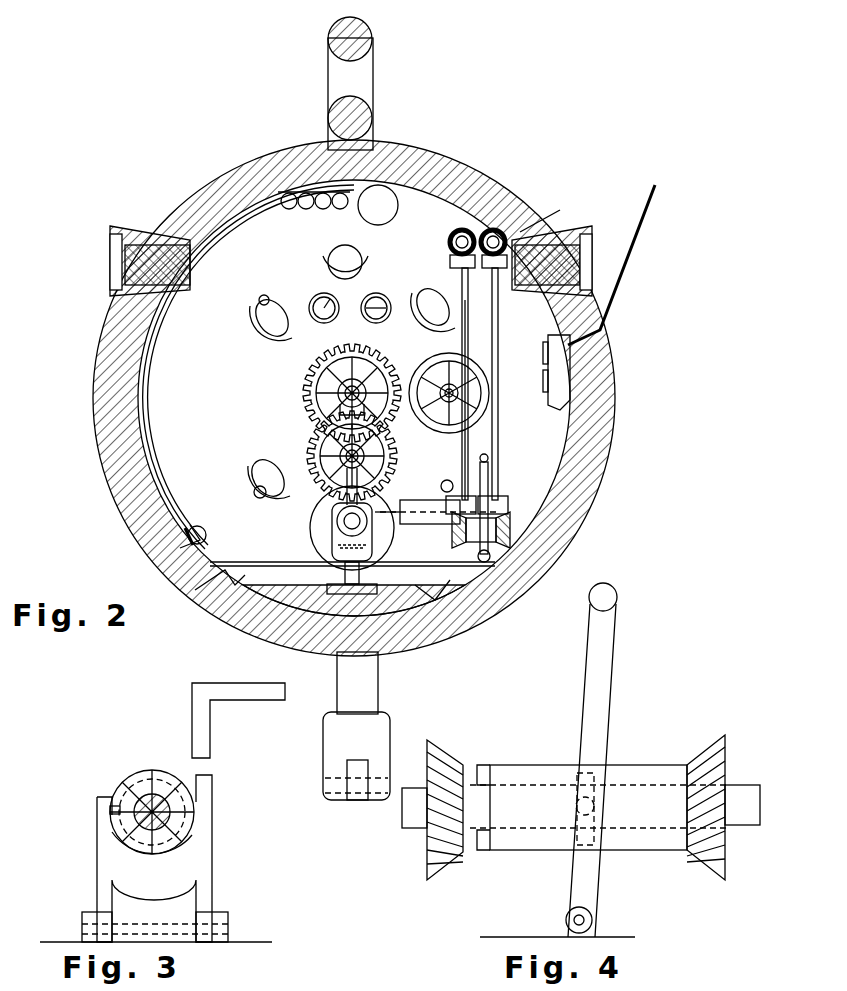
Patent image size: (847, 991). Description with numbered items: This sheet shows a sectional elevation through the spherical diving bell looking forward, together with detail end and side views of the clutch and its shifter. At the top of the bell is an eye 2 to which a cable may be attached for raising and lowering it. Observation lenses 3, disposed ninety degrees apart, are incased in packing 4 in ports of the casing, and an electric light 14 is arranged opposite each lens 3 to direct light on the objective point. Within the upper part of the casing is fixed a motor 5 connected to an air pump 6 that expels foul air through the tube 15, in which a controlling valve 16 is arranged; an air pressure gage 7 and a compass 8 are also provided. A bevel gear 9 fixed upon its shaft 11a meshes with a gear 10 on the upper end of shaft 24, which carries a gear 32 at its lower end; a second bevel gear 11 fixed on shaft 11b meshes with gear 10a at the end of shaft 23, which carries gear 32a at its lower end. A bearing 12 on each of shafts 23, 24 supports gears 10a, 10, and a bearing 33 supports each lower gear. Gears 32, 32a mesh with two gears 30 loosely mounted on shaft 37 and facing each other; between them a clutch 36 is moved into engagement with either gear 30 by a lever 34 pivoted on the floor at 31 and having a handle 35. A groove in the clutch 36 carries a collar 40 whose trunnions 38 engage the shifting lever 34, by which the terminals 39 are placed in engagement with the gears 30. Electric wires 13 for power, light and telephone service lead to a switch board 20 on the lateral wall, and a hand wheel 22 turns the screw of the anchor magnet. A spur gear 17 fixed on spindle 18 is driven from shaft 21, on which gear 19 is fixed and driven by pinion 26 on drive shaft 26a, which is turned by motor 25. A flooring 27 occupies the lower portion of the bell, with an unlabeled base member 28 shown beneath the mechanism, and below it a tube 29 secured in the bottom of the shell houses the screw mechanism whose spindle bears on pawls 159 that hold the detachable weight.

In FIG. 2, the eye 2 is at (362, 78).
In FIG. 2, the observation lenses 3 is at (343, 258).
In FIG. 2, the packing 4 is at (110, 238).
In FIG. 2, the motor 5 is at (378, 300).
In FIG. 2, the air pump 6 is at (332, 195).
In FIG. 2, the air pressure gage 7 is at (316, 298).
In FIG. 2, the compass 8 is at (437, 300).
In FIG. 2, the bevel gear 9 is at (466, 228).
In FIG. 2, the gear 10 is at (452, 260).
In FIG. 2, the gear 10a is at (490, 268).
In FIG. 2, the bevel gear 11 is at (496, 238).
In FIG. 2, the shaft 11a is at (453, 250).
In FIG. 2, the shaft 11b is at (497, 228).
In FIG. 2, the bearing 12 is at (547, 213).
In FIG. 2, the electric wires 13 is at (655, 187).
In FIG. 2, the electric lights 14 is at (259, 302).
In FIG. 2, the tube 15 is at (130, 444).
In FIG. 2, the controlling valve 16 is at (189, 540).
In FIG. 2, the spur gear 17 is at (342, 392).
In FIG. 2, the spindle 18 is at (340, 404).
In FIG. 2, the gear 19 is at (318, 428).
In FIG. 2, the switch board 20 is at (556, 358).
In FIG. 2, the shaft 21 is at (318, 456).
In FIG. 2, the hand wheel 22 is at (486, 402).
In FIG. 2, the shaft 23 is at (500, 428).
In FIG. 2, the shaft 24 is at (488, 460).
In FIG. 2, the motor 25 is at (322, 514).
In FIG. 2, the pinion 26 is at (332, 530).
In FIG. 2, the drive shaft 26a is at (350, 560).
In FIG. 2, the flooring 27 is at (295, 528).
In FIG. 2, the base plate 28 is at (330, 598).
In FIG. 2, the tube 29 is at (364, 684).
In FIG. 2, the gears 30 is at (470, 522).
In FIG. 4, the gears 30 is at (447, 770).
In FIG. 2, the pivot 31 is at (488, 558).
In FIG. 3, the pivot 31 is at (86, 926).
In FIG. 4, the pivot 31 is at (586, 918).
In FIG. 2, the gear 32 is at (470, 532).
In FIG. 2, the gear 32a is at (462, 512).
In FIG. 2, the bearing 33 is at (470, 506).
In FIG. 2, the lever 34 is at (500, 496).
In FIG. 3, the lever 34 is at (200, 846).
In FIG. 4, the lever 34 is at (598, 688).
In FIG. 2, the handle 35 is at (480, 472).
In FIG. 3, the handle 35 is at (222, 698).
In FIG. 4, the handle 35 is at (606, 600).
In FIG. 2, the clutch 36 is at (440, 532).
In FIG. 3, the clutch 36 is at (150, 770).
In FIG. 4, the clutch 36 is at (535, 766).
In FIG. 2, the shaft 37 is at (380, 512).
In FIG. 3, the shaft 37 is at (136, 798).
In FIG. 4, the shaft 37 is at (415, 822).
In FIG. 3, the trunnions 38 is at (112, 818).
In FIG. 4, the trunnions 38 is at (580, 812).
In FIG. 4, the terminals 39 is at (484, 778).
In FIG. 4, the collar 40 is at (596, 790).
In FIG. 2, the pawls 159 is at (356, 796).